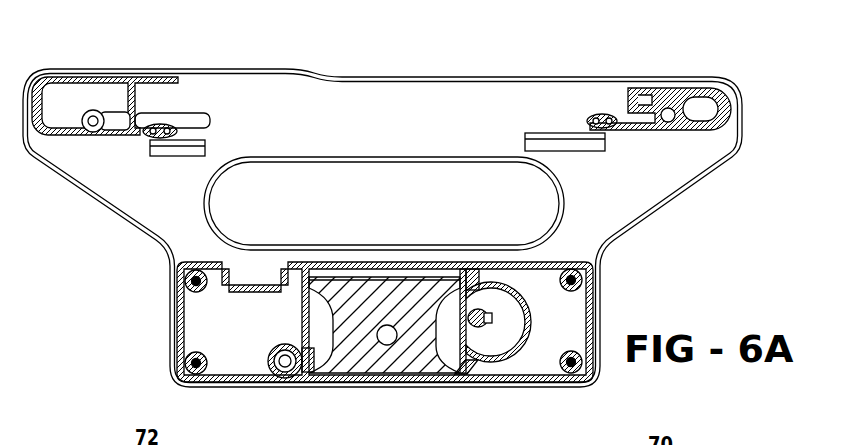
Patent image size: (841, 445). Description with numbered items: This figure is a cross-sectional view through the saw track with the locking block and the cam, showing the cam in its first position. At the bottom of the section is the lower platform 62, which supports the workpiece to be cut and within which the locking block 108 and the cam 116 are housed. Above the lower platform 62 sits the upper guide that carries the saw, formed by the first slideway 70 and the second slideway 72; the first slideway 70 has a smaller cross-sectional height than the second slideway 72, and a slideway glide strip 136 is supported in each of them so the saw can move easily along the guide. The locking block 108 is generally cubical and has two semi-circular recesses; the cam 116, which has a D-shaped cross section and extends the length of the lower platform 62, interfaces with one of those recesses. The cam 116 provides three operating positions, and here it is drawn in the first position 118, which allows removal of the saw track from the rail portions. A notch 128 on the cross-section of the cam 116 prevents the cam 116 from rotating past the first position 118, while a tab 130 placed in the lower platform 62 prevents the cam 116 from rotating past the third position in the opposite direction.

The lower platform 62 is at (172, 318).
The first slideway 70 is at (630, 95).
The second slideway 72 is at (163, 70).
The locking block 108 is at (382, 386).
The cam 116 is at (462, 330).
The first position 118 is at (515, 380).
The notch 128 is at (476, 312).
The tab 130 is at (484, 283).
The slideway glide strip 136 is at (162, 128).